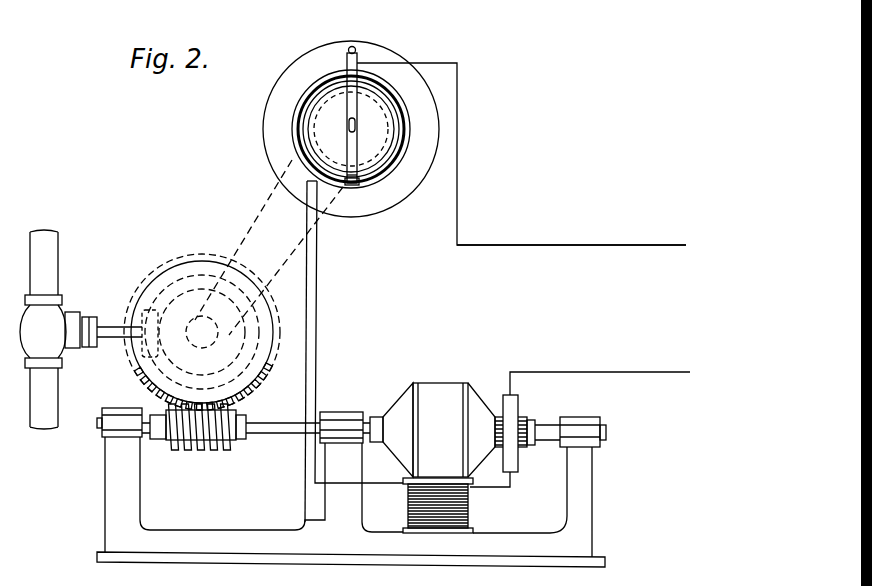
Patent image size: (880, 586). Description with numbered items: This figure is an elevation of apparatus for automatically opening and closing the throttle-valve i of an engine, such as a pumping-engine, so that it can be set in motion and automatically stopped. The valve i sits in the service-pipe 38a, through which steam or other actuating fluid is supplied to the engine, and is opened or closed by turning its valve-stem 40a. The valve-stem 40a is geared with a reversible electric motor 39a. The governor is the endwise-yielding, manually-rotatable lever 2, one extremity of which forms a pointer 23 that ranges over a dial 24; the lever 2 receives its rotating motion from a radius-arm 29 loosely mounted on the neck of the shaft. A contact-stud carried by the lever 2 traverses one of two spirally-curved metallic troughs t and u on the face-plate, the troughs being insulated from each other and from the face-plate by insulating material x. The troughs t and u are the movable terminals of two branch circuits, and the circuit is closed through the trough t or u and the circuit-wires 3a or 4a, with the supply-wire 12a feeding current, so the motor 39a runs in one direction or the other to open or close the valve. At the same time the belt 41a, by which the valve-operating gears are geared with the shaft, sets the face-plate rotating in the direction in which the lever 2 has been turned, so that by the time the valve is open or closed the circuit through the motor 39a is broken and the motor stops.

The lever 2 is at (358, 72).
The pointer 23 is at (354, 47).
The dial 24 is at (397, 199).
The radius-arm 29 is at (352, 185).
The insulating material x is at (320, 90).
The spirally-curved metallic trough t is at (298, 115).
The spirally-curved metallic trough u is at (351, 129).
The supply-wire 12a is at (571, 233).
The belt 41a is at (233, 285).
The circuit-wire 4a is at (318, 330).
The circuit-wire 3a is at (300, 398).
The service-pipe 38a is at (56, 392).
The throttle-valve i is at (62, 312).
The valve-stem 40a is at (110, 325).
The electric motor 39a is at (416, 441).